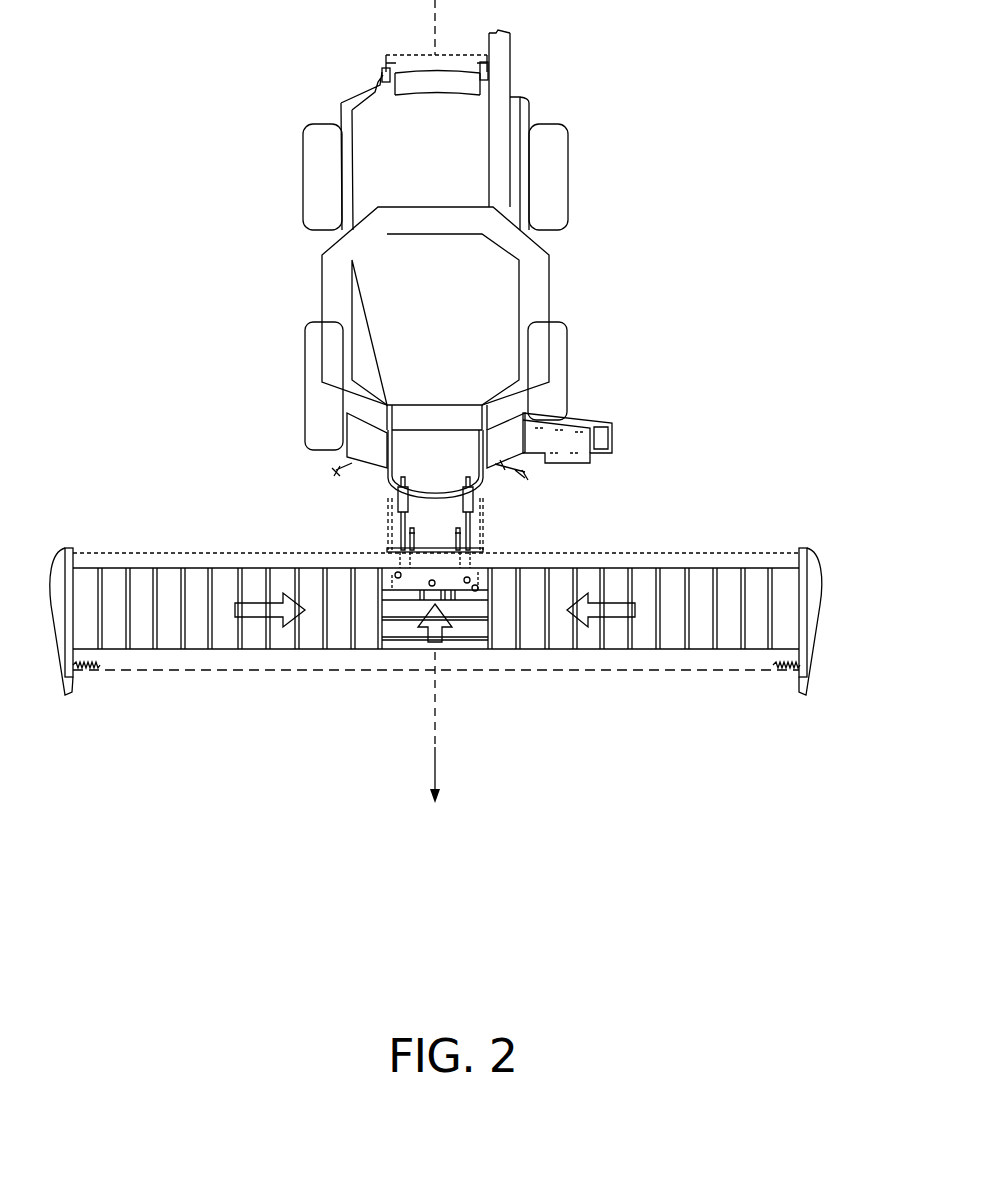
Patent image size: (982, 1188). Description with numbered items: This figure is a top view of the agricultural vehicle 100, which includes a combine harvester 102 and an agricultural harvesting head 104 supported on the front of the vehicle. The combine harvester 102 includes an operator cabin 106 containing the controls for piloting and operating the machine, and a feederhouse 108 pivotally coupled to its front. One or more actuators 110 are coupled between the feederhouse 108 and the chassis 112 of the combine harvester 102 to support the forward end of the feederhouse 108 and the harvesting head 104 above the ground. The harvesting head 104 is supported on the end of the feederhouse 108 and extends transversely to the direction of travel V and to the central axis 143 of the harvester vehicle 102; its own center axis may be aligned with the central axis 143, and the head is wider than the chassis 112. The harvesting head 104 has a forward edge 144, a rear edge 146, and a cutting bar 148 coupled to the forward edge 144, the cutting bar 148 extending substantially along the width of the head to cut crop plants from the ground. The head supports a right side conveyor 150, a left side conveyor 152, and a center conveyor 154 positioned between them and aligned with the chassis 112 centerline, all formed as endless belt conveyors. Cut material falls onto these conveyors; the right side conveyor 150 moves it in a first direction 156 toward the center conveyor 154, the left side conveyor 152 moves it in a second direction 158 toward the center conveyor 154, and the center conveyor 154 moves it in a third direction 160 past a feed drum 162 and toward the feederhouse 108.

The agricultural vehicle 100 is at (183, 83).
The combine harvester 102 is at (318, 302).
The agricultural harvesting head 104 is at (142, 548).
The operator cabin 106 is at (530, 300).
The feederhouse 108 is at (392, 517).
The actuators 110 is at (478, 505).
The chassis 112 is at (397, 467).
The central axis 143 is at (435, 720).
The forward edge 144 is at (673, 652).
The rear edge 146 is at (665, 553).
The cutting bar 148 is at (773, 665).
The right side conveyor 150 is at (338, 617).
The left side conveyor 152 is at (558, 637).
The center conveyor 154 is at (403, 630).
The first direction 156 is at (260, 610).
The second direction 158 is at (593, 610).
The third direction 160 is at (440, 630).
The feed drum 162 is at (480, 590).
The direction of travel V is at (435, 778).